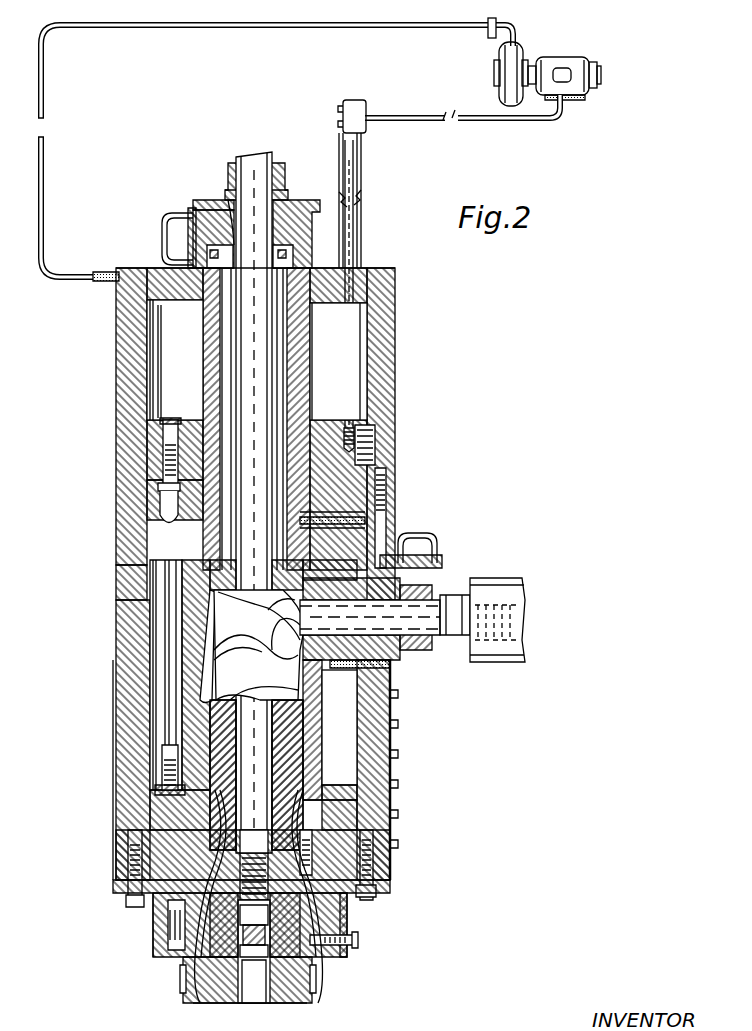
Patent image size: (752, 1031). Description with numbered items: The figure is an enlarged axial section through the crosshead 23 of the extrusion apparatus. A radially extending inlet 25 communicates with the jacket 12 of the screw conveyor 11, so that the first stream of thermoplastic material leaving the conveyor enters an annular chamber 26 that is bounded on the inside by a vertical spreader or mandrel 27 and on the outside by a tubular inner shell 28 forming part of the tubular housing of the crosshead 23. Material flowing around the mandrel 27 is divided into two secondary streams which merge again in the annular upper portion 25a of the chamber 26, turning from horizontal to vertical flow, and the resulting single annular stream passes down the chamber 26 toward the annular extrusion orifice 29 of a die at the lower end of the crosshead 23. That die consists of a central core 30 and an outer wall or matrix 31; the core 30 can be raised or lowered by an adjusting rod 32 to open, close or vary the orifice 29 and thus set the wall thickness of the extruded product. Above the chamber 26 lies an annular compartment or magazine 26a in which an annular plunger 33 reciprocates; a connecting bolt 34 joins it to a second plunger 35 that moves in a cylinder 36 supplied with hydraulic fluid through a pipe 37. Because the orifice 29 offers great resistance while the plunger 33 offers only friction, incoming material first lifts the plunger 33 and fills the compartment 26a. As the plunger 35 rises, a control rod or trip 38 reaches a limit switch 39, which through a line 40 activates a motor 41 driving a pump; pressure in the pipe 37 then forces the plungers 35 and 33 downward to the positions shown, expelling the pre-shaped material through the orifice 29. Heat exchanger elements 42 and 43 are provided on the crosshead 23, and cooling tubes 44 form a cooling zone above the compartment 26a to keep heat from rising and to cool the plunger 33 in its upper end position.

The screw conveyor 11 is at (500, 667).
The jacket 12 is at (504, 588).
The crosshead 23 is at (410, 487).
The inlet 25 is at (420, 655).
The annular upper portion 25a is at (312, 748).
The annular chamber 26 is at (385, 880).
The annular compartment 26a is at (152, 840).
The mandrel 27 is at (350, 904).
The tubular inner shell 28 is at (345, 938).
The annular extrusion orifice 29 is at (182, 988).
The central core 30 is at (283, 992).
The outer wall 31 is at (325, 985).
The adjusting rod 32 is at (257, 366).
The annular plunger 33 is at (155, 807).
The connecting bolt 34 is at (158, 700).
The second plunger 35 is at (160, 450).
The cylinder 36 is at (158, 344).
The pipe 37 is at (95, 272).
The control rod 38 is at (348, 334).
The limit switch 39 is at (354, 101).
The line 40 is at (487, 124).
The motor 41 is at (598, 50).
The heat exchanger element 42 is at (115, 756).
The heat exchanger element 43 is at (155, 905).
The cooling tubes 44 is at (365, 526).